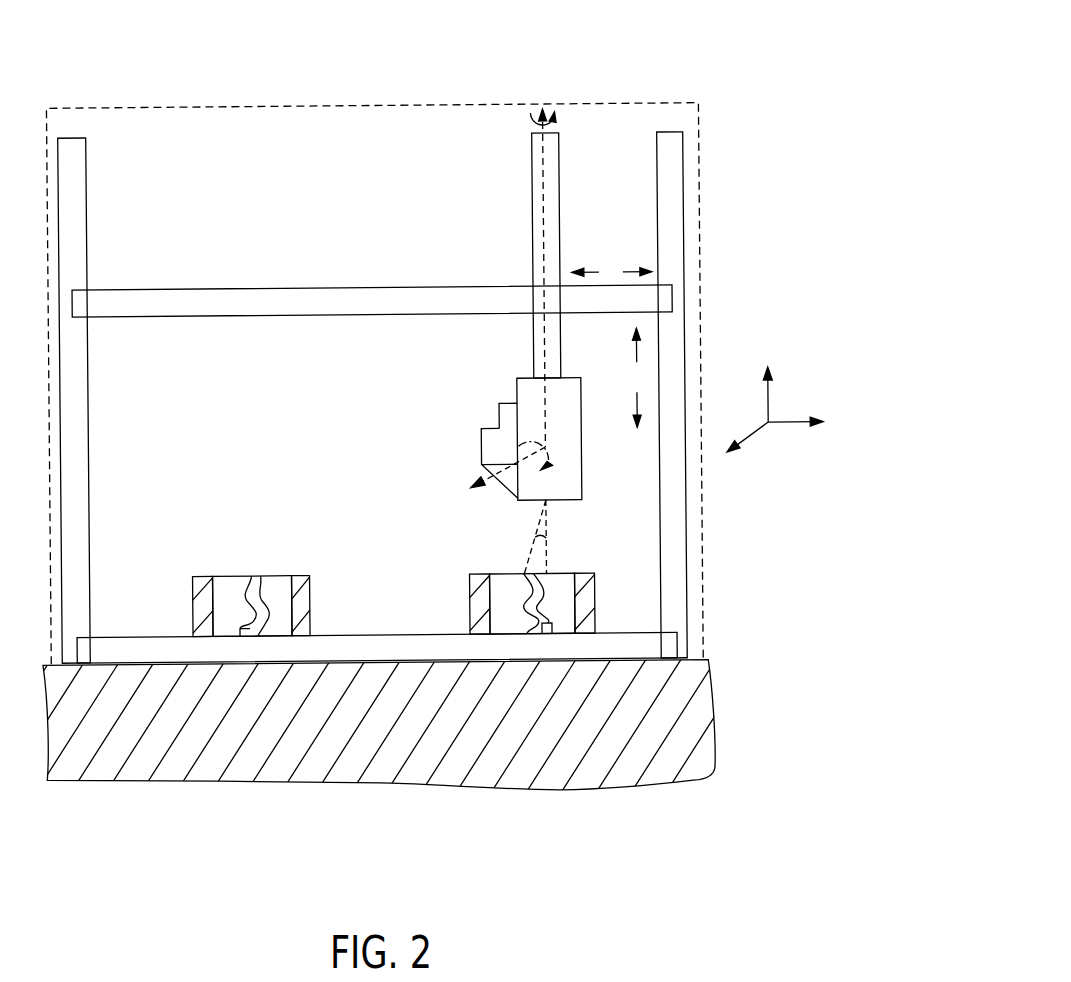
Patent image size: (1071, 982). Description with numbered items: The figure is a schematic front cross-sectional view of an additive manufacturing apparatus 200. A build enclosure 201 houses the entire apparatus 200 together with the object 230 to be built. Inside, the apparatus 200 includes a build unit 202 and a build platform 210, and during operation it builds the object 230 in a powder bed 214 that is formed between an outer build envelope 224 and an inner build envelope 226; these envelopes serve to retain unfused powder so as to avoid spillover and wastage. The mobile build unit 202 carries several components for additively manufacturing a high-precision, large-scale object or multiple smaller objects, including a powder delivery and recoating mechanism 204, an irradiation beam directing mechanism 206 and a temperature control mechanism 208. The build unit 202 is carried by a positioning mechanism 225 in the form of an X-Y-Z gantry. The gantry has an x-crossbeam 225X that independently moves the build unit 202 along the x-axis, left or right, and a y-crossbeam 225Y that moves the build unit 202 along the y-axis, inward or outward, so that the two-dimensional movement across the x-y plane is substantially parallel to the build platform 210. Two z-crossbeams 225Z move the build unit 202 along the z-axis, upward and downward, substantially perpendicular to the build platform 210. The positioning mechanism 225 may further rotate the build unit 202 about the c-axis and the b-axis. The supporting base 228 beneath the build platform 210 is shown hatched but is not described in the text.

The additive manufacturing apparatus 200 is at (376, 72).
The build enclosure 201 is at (92, 102).
The build unit 202 is at (398, 379).
The powder delivery and recoating mechanism 204 is at (490, 458).
The irradiation beam directing mechanism 206 is at (523, 397).
The temperature control mechanism 208 is at (512, 420).
The build platform 210 is at (670, 651).
The powder bed 214 is at (290, 588).
The outer build envelope 224 is at (202, 605).
The positioning mechanism 225 is at (680, 121).
The x-crossbeam 225X is at (673, 301).
The y-crossbeam 225Y is at (542, 165).
The z-crossbeam 225Z is at (74, 216).
The inner build envelope 226 is at (304, 603).
The base 228 is at (697, 741).
The object 230 is at (246, 565).